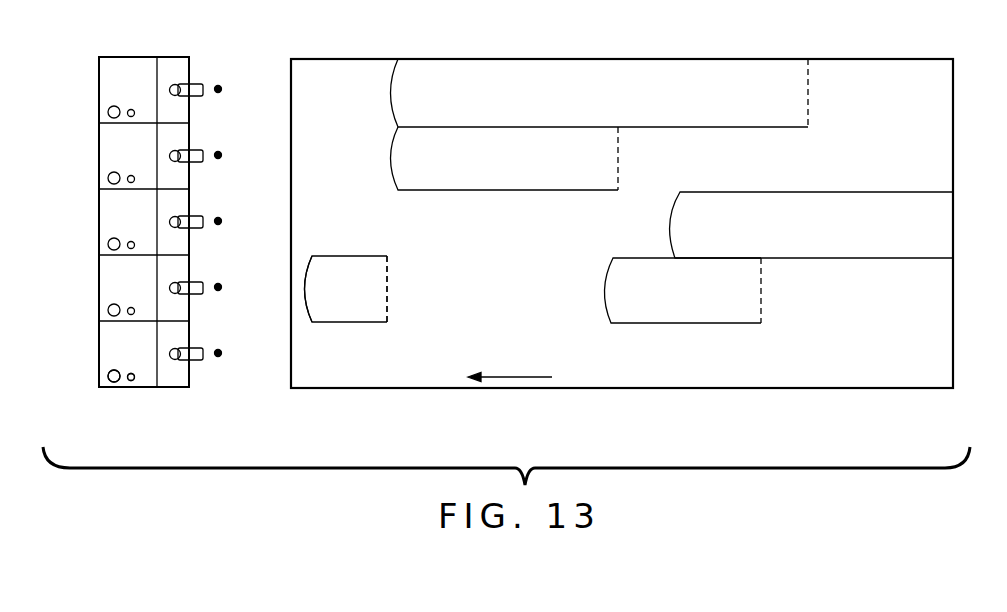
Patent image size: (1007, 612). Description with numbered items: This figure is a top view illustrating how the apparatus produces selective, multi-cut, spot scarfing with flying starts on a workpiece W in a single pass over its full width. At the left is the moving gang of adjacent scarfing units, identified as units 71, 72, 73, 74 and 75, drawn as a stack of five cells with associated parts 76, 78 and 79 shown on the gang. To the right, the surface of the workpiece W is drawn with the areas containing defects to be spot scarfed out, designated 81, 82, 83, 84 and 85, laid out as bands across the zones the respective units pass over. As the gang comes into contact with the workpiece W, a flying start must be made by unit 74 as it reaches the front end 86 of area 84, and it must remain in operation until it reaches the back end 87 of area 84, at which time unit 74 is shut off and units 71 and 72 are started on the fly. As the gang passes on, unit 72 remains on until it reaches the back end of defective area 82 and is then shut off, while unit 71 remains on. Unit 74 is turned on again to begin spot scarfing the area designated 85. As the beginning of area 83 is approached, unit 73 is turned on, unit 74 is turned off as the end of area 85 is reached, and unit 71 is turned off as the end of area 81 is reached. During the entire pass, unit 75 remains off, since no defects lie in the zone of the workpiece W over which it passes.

The scarfing unit 71 is at (99, 84).
The scarfing unit 72 is at (99, 150).
The scarfing unit 73 is at (99, 216).
The scarfing unit 74 is at (99, 282).
The scarfing unit 75 is at (99, 348).
The ink applying member 76 is at (197, 83).
The large guide hole 78 is at (115, 383).
The small guide hole 79 is at (134, 381).
The defective area 81 is at (582, 66).
The defective area 82 is at (538, 183).
The defective area 83 is at (883, 250).
The defective area 84 is at (357, 308).
The defective area 85 is at (694, 314).
The front end 86 is at (303, 293).
The back end 87 is at (388, 297).
The workpiece W is at (587, 383).